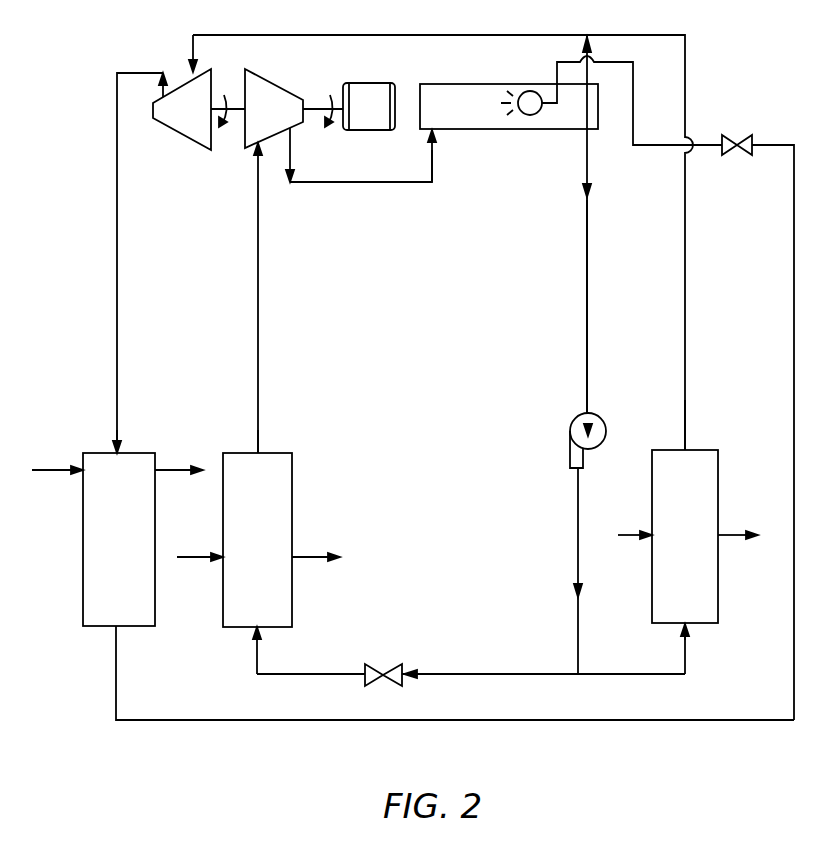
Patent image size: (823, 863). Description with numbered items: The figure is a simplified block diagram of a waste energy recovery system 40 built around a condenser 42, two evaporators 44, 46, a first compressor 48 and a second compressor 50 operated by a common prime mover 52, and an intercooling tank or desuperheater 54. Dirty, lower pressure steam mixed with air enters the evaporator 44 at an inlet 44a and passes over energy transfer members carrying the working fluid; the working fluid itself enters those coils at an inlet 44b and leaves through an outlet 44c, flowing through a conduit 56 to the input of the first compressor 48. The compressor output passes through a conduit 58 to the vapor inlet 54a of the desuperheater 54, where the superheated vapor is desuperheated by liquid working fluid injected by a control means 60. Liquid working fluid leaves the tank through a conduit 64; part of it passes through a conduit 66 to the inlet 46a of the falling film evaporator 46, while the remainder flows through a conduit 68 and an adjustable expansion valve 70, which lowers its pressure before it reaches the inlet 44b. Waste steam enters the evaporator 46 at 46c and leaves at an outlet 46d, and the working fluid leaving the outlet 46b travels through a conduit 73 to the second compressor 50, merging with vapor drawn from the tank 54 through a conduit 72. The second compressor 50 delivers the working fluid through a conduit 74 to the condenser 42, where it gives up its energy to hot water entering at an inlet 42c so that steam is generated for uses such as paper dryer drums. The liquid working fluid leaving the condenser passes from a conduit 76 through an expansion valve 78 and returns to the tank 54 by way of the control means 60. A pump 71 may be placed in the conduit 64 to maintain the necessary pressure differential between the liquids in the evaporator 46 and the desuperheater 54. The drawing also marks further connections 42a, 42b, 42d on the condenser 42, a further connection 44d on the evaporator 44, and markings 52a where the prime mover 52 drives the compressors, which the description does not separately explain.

The waste energy recovery system 40 is at (608, 752).
The condenser 42 is at (97, 450).
The inlet of first heat exchanger 42a is at (122, 450).
The outlet of first heat exchanger 42b is at (116, 666).
The condenser inlet 42c is at (50, 470).
The external fluid outlet of first heat exchanger 42d is at (163, 470).
The evaporator 44 is at (292, 485).
The evaporator inlet 44a is at (200, 557).
The working fluid inlet 44b is at (260, 665).
The evaporator outlet 44c is at (259, 450).
The external fluid outlet of second heat exchanger 44d is at (340, 557).
The falling film evaporator 46 is at (718, 465).
The evaporator inlet 46a is at (690, 628).
The evaporator outlet 46b is at (683, 447).
The waste steam inlet 46c is at (648, 532).
The waste steam outlet 46d is at (752, 532).
The first compressor 48 is at (283, 92).
The second compressor 50 is at (173, 133).
The common prime mover 52 is at (381, 130).
The shaft couplings 52a is at (234, 110).
The intercooling tank 54 is at (562, 130).
The vapor inlet 54a is at (432, 165).
The conduit 56 is at (258, 318).
The conduit 58 is at (401, 183).
The control means 60 is at (539, 113).
The conduit 64 is at (587, 396).
The conduit 66 is at (683, 677).
The conduit 68 is at (505, 677).
The adjustable expansion valve 70 is at (375, 664).
The pump 71 is at (570, 468).
The conduit 72 is at (590, 53).
The conduit 73 is at (484, 31).
The conduit 74 is at (117, 233).
The conduit 76 is at (393, 722).
The expansion valve 78 is at (728, 135).